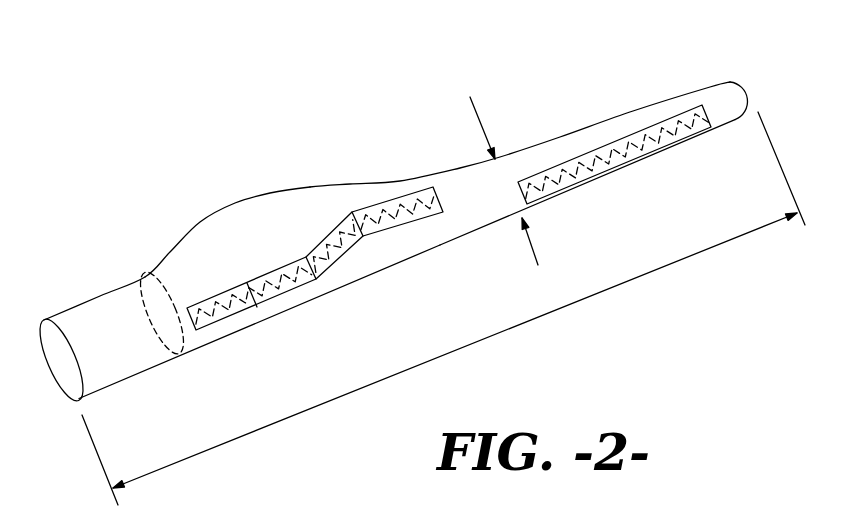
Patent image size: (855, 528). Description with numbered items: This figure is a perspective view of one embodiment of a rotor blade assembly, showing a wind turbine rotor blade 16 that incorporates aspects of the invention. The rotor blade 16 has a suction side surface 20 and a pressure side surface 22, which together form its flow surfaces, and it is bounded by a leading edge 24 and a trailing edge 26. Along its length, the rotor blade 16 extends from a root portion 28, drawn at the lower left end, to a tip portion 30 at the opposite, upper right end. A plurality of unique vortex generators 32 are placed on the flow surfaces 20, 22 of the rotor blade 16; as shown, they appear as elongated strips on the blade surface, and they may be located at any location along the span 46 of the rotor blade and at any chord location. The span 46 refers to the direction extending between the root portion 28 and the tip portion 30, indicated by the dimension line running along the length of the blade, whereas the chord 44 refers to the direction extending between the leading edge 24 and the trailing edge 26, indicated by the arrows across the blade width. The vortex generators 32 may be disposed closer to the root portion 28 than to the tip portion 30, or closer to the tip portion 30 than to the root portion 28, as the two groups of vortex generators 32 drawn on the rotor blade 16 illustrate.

The rotor blade 16 is at (152, 92).
The suction side surface 20 is at (460, 225).
The pressure side surface 22 is at (287, 220).
The leading edge 24 is at (553, 203).
The trailing edge 26 is at (462, 168).
The root portion 28 is at (132, 383).
The tip portion 30 is at (757, 93).
The vortex generators 32 is at (222, 295).
The chord 44 is at (476, 108).
The span 46 is at (553, 312).